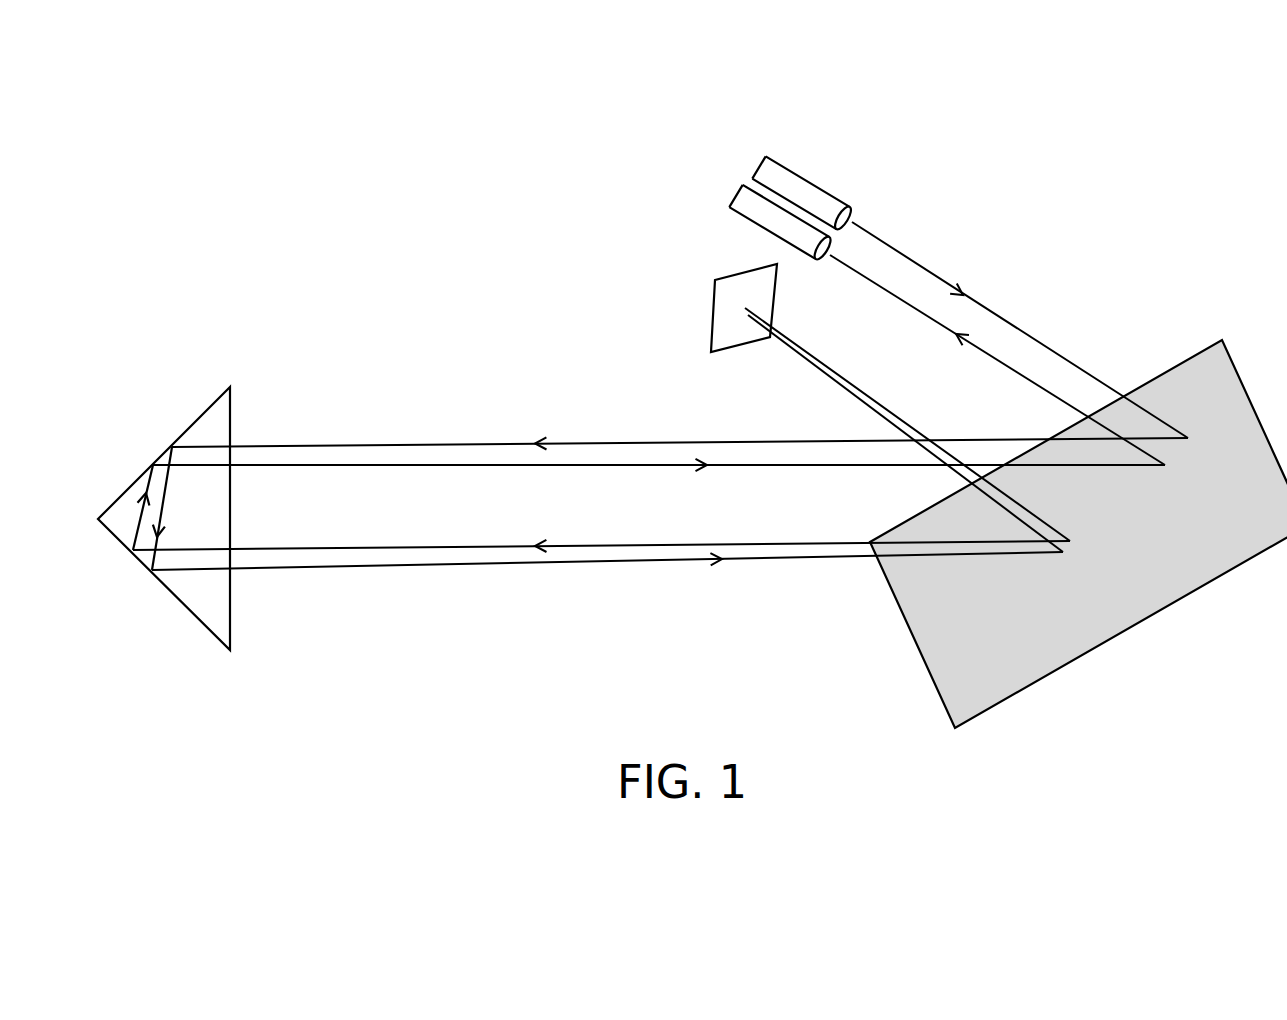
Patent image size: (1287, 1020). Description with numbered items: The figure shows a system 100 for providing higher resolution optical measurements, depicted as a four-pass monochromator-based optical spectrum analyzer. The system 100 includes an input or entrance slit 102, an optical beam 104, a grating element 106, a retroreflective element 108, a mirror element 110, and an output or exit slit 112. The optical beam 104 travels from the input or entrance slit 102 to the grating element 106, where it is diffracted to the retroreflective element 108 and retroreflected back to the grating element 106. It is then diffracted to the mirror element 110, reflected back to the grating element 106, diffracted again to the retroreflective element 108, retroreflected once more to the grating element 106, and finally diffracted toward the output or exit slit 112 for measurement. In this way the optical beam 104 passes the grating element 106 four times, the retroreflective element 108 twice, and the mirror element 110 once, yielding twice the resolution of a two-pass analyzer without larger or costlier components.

The system 100 is at (424, 233).
The input or entrance slit 102 is at (790, 168).
The output or exit slit 112 is at (728, 190).
The optical beam 104 is at (988, 309).
The grating element 106 is at (1233, 364).
The retroreflective element 108 is at (196, 420).
The mirror element 110 is at (712, 322).